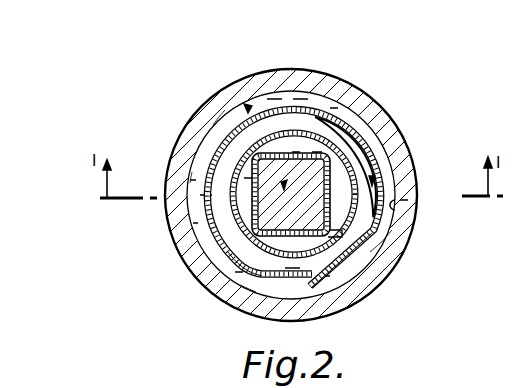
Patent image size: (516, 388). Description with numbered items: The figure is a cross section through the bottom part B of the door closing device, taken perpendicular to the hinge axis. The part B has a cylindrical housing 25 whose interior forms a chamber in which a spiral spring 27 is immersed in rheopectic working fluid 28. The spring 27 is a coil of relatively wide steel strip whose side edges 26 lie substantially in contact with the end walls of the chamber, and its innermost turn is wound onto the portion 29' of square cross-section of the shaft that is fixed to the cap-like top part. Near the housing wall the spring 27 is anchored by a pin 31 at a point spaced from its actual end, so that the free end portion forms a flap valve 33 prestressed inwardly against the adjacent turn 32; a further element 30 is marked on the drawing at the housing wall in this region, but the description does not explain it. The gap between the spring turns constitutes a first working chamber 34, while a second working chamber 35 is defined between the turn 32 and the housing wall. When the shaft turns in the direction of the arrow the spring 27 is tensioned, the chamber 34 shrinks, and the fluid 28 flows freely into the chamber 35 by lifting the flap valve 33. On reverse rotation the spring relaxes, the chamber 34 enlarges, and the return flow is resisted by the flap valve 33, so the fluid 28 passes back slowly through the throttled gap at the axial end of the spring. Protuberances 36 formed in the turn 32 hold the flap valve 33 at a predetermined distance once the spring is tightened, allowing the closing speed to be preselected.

The cylindrical housing 25 is at (400, 180).
The side edges 26 is at (330, 113).
The spiral spring 27 is at (247, 108).
The rheopectic working fluid 28 is at (217, 205).
The portion of square cross-section 29' is at (195, 104).
The recess 30 is at (392, 232).
The pin 31 is at (398, 205).
The adjacent turn 32 is at (190, 183).
The flap valve 33 is at (325, 292).
The first working chamber 34 is at (232, 236).
The second working chamber 35 is at (287, 93).
The protuberances 36 is at (247, 280).
The bottom part B is at (373, 115).